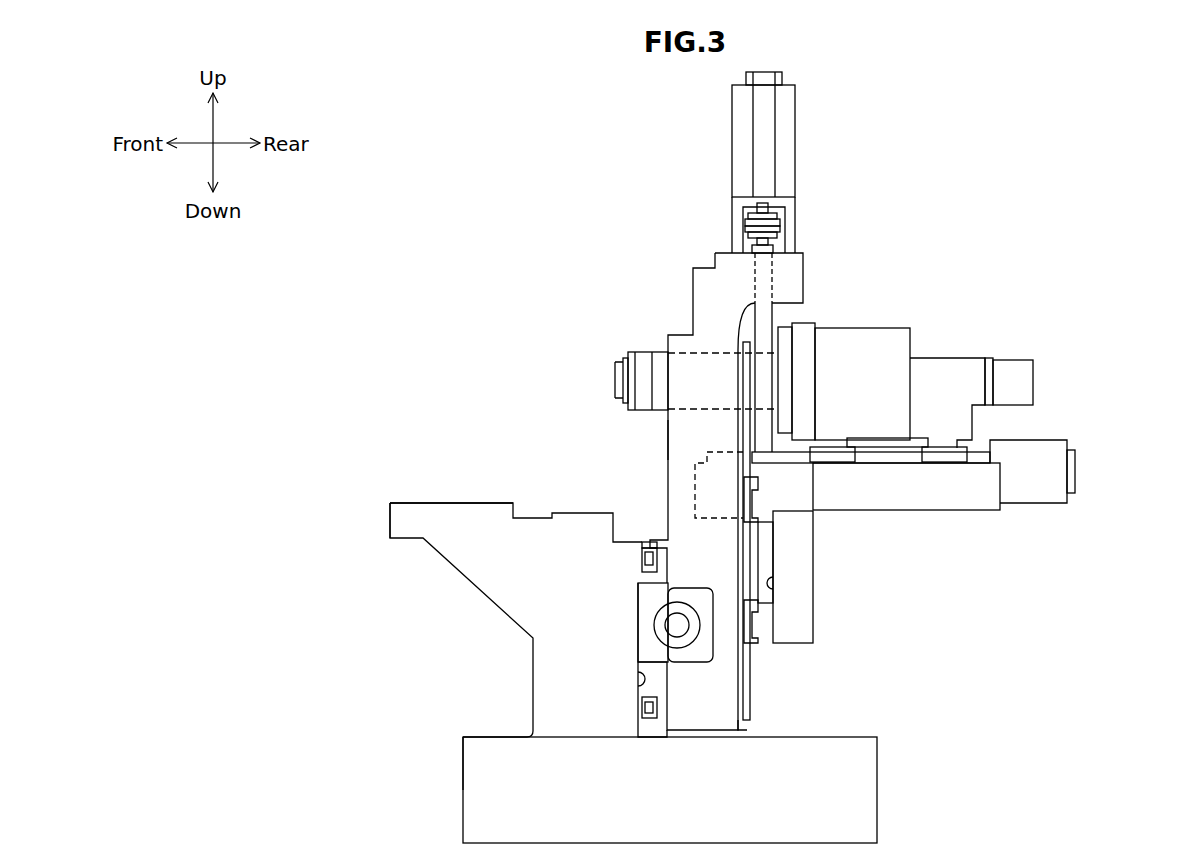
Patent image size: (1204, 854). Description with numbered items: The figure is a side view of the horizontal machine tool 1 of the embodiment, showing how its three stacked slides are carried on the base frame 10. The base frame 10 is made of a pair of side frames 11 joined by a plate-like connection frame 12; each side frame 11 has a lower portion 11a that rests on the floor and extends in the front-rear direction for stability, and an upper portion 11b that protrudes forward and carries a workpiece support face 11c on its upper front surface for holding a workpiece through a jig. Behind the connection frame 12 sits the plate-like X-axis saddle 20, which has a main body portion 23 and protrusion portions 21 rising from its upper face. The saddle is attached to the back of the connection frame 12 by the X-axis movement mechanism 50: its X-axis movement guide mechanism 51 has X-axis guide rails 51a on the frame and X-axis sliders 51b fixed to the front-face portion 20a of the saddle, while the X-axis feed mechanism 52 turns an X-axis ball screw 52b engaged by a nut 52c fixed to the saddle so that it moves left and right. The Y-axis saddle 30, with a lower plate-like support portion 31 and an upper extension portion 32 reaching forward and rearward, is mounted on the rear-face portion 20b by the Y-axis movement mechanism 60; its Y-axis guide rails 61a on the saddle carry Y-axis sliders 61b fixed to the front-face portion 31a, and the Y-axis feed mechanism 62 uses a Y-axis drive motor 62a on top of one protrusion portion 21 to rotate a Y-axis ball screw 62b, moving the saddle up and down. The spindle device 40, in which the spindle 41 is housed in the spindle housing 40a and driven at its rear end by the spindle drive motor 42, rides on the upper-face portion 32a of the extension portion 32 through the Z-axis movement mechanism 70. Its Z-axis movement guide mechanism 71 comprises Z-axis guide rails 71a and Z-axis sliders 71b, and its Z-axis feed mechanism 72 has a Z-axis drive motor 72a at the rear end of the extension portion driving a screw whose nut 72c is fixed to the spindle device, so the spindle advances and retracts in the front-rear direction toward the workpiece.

The horizontal machine tool 1 is at (955, 150).
The base frame 10 is at (880, 770).
The side frame 11 is at (543, 682).
The lower portion of side frame 11a is at (472, 768).
The upper portion of side frame 11b is at (402, 522).
The workpiece support face 11c is at (422, 502).
The connection frame 12 is at (640, 687).
The X-axis saddle 20 is at (668, 467).
The front-face portion of X-axis saddle 20a is at (668, 437).
The rear-face portion of X-axis saddle 20b is at (747, 713).
The protrusion portion 21 is at (715, 298).
The main body portion 23 is at (723, 558).
The Y-axis saddle 30 is at (815, 638).
The support portion 31 is at (803, 622).
The front-face portion of support portion 31a is at (775, 587).
The extension portion 32 is at (973, 498).
The upper-face portion of extension portion 32a is at (1005, 470).
The spindle device 40 is at (912, 340).
The spindle housing 40a is at (658, 360).
The spindle 41 is at (620, 380).
The spindle drive motor 42 is at (895, 397).
The X-axis movement mechanism 50 is at (643, 535).
The X-axis movement guide mechanism 51 is at (628, 560).
The X-axis guide rail 51a is at (660, 567).
The X-axis slider 51b is at (658, 552).
The X-axis feed mechanism 52 is at (650, 618).
The X-axis ball screw 52b is at (680, 632).
The nut 52c is at (678, 637).
The Y-axis movement mechanism 60 is at (768, 513).
The Y-axis guide rail 61a is at (748, 686).
The Y-axis slider 61b is at (752, 498).
The Y-axis feed mechanism 62 is at (773, 315).
The Y-axis drive motor 62a is at (787, 128).
The Y-axis ball screw 62b is at (763, 377).
The Z-axis movement mechanism 70 is at (985, 428).
The Z-axis movement guide mechanism 71 is at (933, 470).
The Z-axis guide rail 71a is at (880, 455).
The Z-axis slider 71b is at (832, 455).
The Z-axis feed mechanism 72 is at (1078, 470).
The Z-axis drive motor 72a is at (1060, 483).
The nut 72c is at (893, 447).